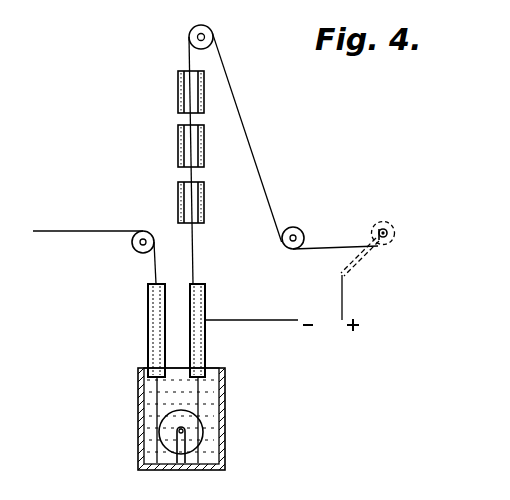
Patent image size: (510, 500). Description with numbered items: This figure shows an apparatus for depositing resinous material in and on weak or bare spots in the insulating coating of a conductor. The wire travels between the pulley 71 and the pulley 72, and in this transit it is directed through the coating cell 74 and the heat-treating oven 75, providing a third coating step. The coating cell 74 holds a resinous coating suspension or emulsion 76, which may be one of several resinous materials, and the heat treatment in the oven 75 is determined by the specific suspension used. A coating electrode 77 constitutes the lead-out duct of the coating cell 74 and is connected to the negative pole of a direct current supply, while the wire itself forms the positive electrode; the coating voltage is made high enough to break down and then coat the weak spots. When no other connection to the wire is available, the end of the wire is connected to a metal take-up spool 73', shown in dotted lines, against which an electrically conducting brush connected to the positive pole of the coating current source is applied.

The pulley 71 is at (135, 248).
The pulley 72 is at (300, 230).
The metal take-up spool 73' is at (405, 247).
The coating cell 74 is at (140, 448).
The heat-treating oven 75 is at (173, 150).
The resinous coating suspension or emulsion 76 is at (208, 437).
The coating electrode 77 is at (205, 299).